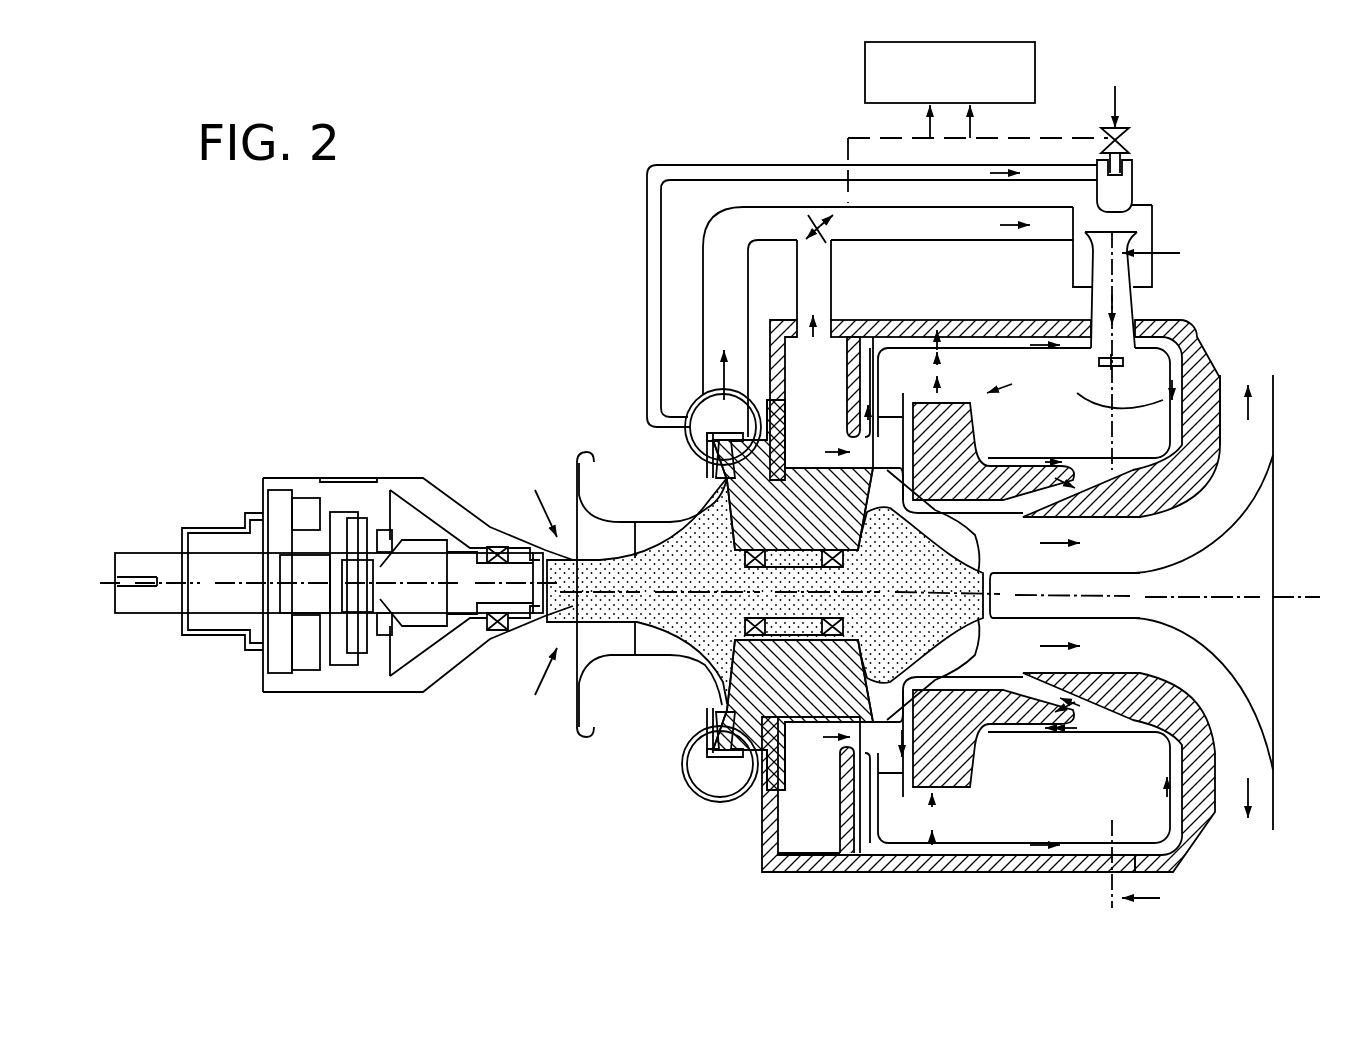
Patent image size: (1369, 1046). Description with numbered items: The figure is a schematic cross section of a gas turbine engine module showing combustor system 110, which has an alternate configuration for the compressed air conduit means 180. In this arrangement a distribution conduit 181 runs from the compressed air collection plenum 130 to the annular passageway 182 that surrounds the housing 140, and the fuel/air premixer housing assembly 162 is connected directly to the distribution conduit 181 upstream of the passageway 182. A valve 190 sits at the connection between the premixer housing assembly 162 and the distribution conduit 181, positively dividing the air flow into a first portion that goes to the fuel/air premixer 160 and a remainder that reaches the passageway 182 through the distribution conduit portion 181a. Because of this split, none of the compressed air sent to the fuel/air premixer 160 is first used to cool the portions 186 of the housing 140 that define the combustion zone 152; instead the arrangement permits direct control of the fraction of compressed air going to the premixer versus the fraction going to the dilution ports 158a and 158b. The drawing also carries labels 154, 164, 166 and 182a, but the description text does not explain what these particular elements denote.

The combustor system 110 is at (765, 125).
The compressed air collection plenum 130 is at (684, 388).
The housing 140 is at (1170, 437).
The combustion zone 152 is at (1053, 790).
The combustor liner 154 is at (1150, 827).
The dilution port 158a is at (927, 320).
The dilution port 158b is at (930, 382).
The fuel/air premixer 160 is at (1238, 220).
The fuel/air premixer housing assembly 162 is at (897, 240).
The fuel injector 164 is at (1132, 190).
The fuel supply 166 is at (1117, 103).
The compressed air conduit means 180 is at (672, 118).
The distribution conduit 181 is at (702, 262).
The distribution conduit portion 181a is at (794, 260).
The annular passageway 182 is at (987, 320).
The turbine inlet passage 182a is at (1005, 507).
The portions of housing 186 is at (1102, 386).
The valve 190 is at (812, 236).